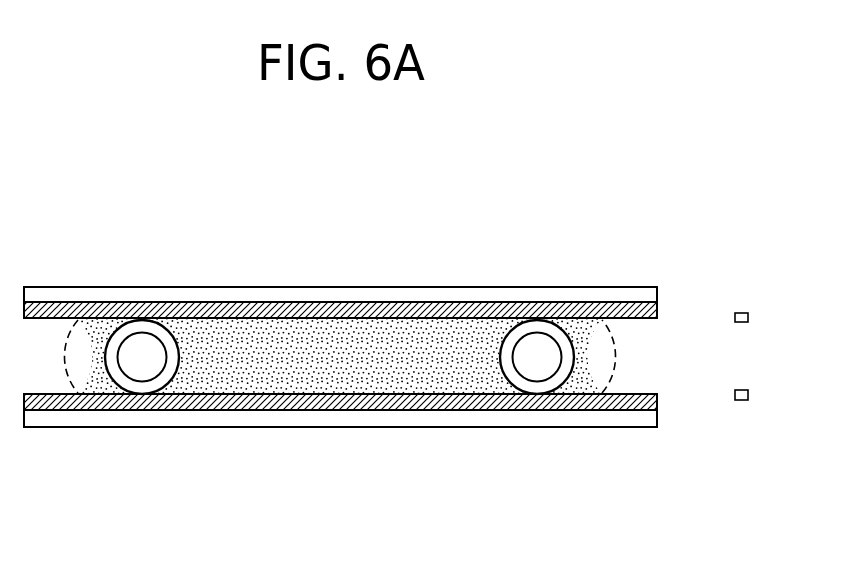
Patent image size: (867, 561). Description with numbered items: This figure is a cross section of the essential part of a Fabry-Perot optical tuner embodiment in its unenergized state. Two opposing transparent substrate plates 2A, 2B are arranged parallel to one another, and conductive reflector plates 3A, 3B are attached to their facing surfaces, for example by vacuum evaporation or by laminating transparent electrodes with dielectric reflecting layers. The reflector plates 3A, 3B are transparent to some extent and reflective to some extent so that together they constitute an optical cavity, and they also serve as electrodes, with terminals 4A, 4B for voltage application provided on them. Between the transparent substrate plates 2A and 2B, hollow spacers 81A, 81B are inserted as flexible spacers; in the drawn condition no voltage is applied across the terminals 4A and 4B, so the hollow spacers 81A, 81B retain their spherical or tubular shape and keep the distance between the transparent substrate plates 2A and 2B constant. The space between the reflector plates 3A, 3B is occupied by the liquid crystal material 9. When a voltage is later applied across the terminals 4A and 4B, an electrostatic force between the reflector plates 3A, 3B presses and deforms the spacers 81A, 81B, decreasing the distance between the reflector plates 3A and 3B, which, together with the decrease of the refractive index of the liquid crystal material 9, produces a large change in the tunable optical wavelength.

The transparent substrate plate 2A is at (297, 292).
The transparent substrate plate 2B is at (432, 415).
The conductive reflector plate 3A is at (430, 310).
The conductive reflector plate 3B is at (553, 398).
The terminal 4A is at (657, 318).
The terminal 4B is at (657, 395).
The hollow spacer 81A is at (150, 321).
The hollow spacer 81B is at (543, 319).
The liquid crystal material 9 is at (295, 379).